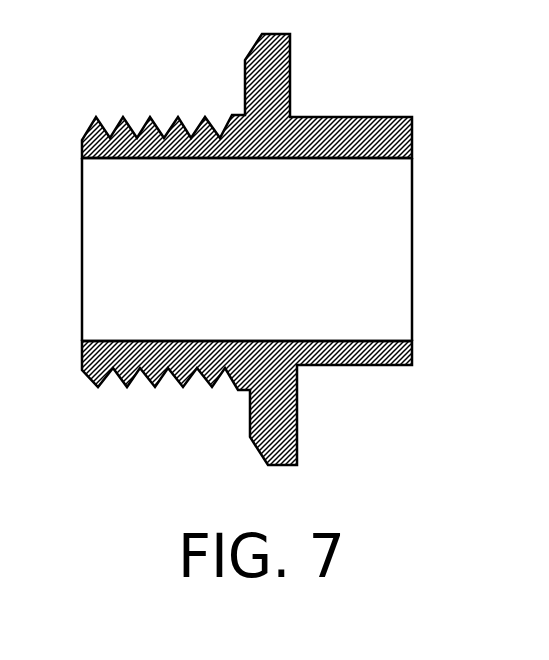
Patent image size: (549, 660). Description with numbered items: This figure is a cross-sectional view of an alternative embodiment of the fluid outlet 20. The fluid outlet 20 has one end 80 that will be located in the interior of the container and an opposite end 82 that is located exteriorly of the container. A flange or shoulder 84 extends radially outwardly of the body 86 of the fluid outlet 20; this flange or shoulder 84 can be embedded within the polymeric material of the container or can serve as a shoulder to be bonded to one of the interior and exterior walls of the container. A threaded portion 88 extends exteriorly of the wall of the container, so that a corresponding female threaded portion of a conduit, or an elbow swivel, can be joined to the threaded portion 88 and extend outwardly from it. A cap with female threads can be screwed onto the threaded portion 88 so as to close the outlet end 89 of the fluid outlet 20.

The fluid outlet 20 is at (250, 241).
The end 80 is at (412, 132).
The opposite end 82 is at (82, 150).
The flange or shoulder 84 is at (290, 47).
The body 86 is at (345, 355).
The threaded portion 88 is at (177, 385).
The outlet end 89 is at (82, 258).